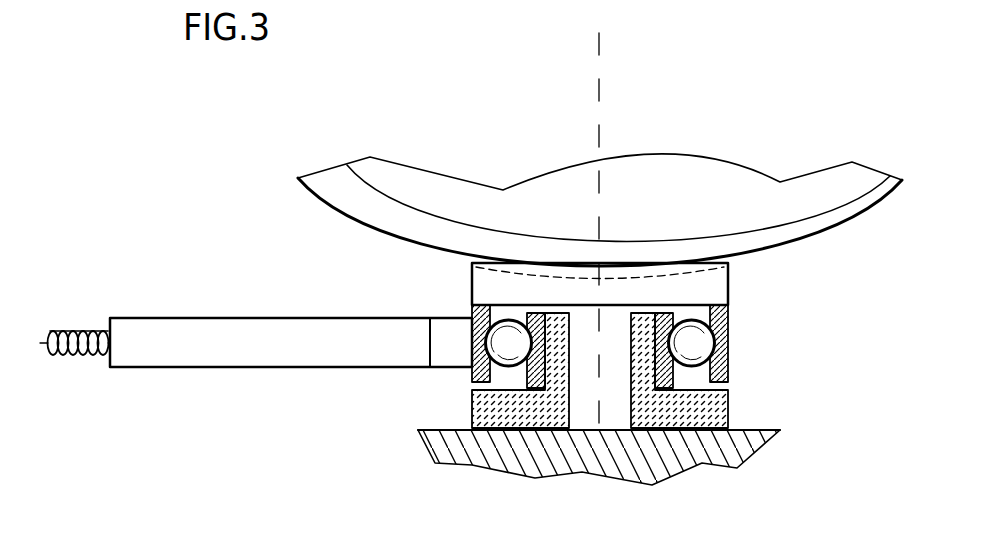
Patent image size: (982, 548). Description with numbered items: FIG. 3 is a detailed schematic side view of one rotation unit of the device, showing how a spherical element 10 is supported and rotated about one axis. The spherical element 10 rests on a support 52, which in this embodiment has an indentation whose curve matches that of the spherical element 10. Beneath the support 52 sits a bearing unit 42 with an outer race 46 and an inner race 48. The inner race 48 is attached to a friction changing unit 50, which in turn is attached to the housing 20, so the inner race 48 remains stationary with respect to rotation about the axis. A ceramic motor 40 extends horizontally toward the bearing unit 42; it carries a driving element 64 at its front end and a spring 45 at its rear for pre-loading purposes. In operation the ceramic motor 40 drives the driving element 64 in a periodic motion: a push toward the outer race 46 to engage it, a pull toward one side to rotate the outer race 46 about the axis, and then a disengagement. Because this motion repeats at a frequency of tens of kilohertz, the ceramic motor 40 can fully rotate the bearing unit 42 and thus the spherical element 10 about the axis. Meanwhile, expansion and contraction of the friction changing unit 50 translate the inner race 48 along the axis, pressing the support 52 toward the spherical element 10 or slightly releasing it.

The spherical element 10 is at (815, 202).
The support 52 is at (728, 285).
The outer race 46 is at (728, 320).
The inner race 48 is at (728, 388).
The friction changing unit 50 is at (728, 407).
The bearing unit 42 is at (752, 352).
The ceramic motor 40 is at (224, 378).
The driving element 64 is at (447, 355).
The spring 45 is at (68, 328).
The housing 20 is at (673, 463).